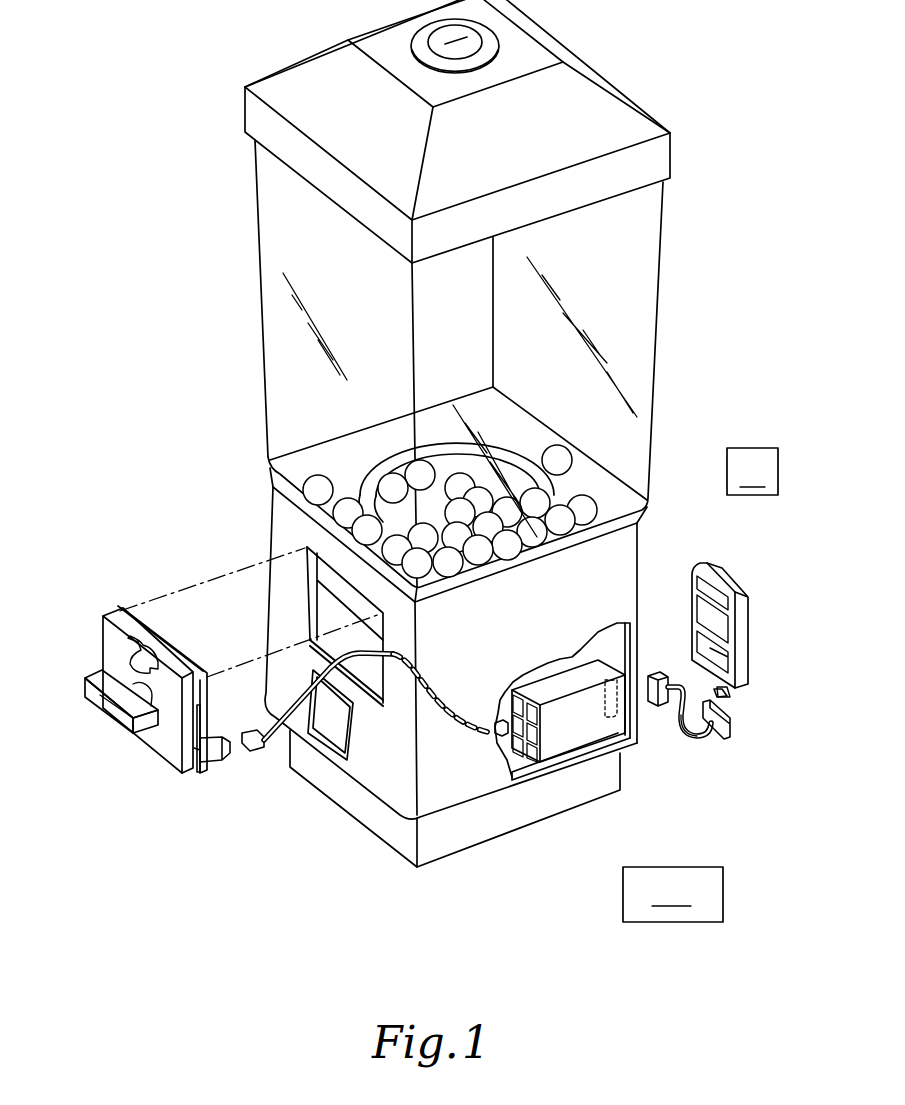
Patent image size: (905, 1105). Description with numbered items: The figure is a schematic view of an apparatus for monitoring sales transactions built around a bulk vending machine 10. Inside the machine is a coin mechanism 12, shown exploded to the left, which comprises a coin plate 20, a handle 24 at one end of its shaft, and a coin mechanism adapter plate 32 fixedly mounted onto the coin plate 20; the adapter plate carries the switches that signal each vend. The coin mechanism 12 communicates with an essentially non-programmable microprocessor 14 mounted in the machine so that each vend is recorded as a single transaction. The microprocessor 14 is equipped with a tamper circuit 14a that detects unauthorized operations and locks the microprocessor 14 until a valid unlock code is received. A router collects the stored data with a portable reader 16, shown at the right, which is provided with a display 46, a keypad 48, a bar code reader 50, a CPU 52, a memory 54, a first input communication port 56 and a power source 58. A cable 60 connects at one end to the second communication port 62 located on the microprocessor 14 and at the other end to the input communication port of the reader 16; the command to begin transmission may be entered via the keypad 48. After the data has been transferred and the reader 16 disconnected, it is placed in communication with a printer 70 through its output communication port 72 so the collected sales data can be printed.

The bulk vending machine 10 is at (652, 433).
The coin mechanism 12 is at (102, 652).
The microprocessor 14 is at (638, 750).
The tamper circuit 14a is at (623, 893).
The portable reader 16 is at (764, 609).
The coin plate 20 is at (205, 768).
The handle 24 is at (85, 686).
The coin mechanism adapter plate 32 is at (150, 628).
The display 46 is at (720, 657).
The keypad 48 is at (732, 627).
The bar code reader 50 is at (708, 582).
The CPU 52 is at (743, 667).
The memory 54 is at (743, 675).
The first input communication port 56 is at (727, 693).
The power source 58 is at (730, 707).
The cable 60 is at (698, 740).
The second communication port 62 is at (653, 673).
The printer 70 is at (705, 687).
The output communication port 72 is at (720, 730).